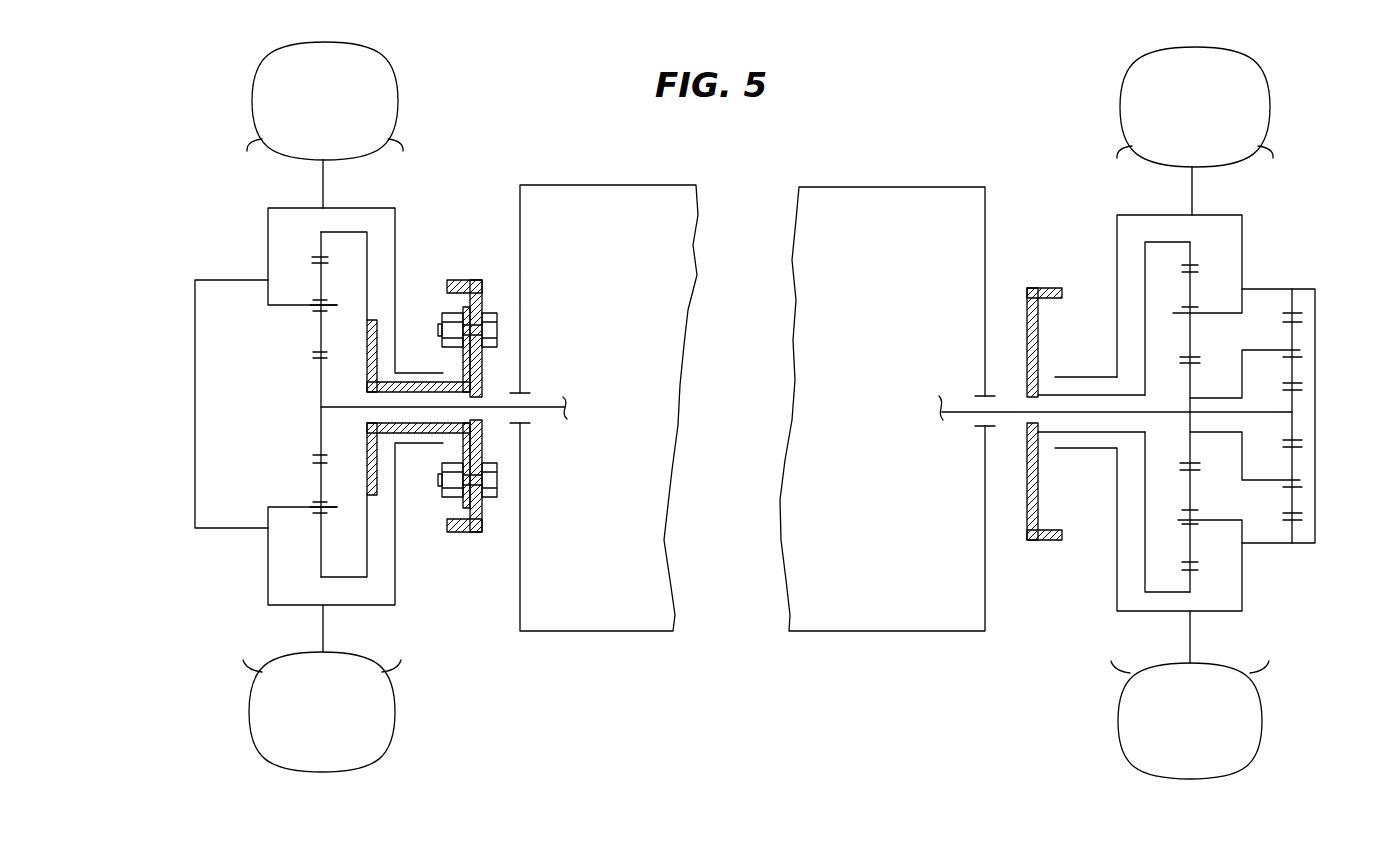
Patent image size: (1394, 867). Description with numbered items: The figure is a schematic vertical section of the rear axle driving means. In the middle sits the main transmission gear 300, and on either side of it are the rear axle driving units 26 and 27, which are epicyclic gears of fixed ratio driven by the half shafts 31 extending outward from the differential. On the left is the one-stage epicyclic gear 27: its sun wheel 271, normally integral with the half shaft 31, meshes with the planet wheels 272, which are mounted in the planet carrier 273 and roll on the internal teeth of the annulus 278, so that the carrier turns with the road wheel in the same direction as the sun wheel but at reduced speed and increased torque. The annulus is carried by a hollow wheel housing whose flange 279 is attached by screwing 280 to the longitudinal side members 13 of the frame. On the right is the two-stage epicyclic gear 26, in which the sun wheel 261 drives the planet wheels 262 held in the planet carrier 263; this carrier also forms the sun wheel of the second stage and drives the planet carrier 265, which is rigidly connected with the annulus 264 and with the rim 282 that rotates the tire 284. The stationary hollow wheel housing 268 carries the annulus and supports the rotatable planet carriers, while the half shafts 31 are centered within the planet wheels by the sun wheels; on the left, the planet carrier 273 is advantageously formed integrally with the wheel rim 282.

The one-stage epicyclic gear 27 is at (404, 191).
The two-stage epicyclic gear 26 is at (1085, 185).
The annulus 278 is at (343, 231).
The planet carrier 273 is at (290, 306).
The planet wheels 272 is at (320, 331).
The sun wheel 271 is at (317, 386).
The flange 279 is at (463, 361).
The screwing 280 is at (488, 334).
The longitudinal side members 13 is at (478, 366).
The half shafts 31 is at (548, 410).
The main transmission gear 300 is at (805, 557).
The wheel rim 282 is at (769, 410).
The tire 284 is at (362, 705).
The hollow wheel housing 268 is at (1193, 253).
The annulus 264 is at (1293, 302).
The planet wheels 262 is at (1294, 367).
The sun wheel 261 is at (1294, 405).
The planet carrier 263 is at (1264, 481).
The planet carrier 265 is at (1232, 521).